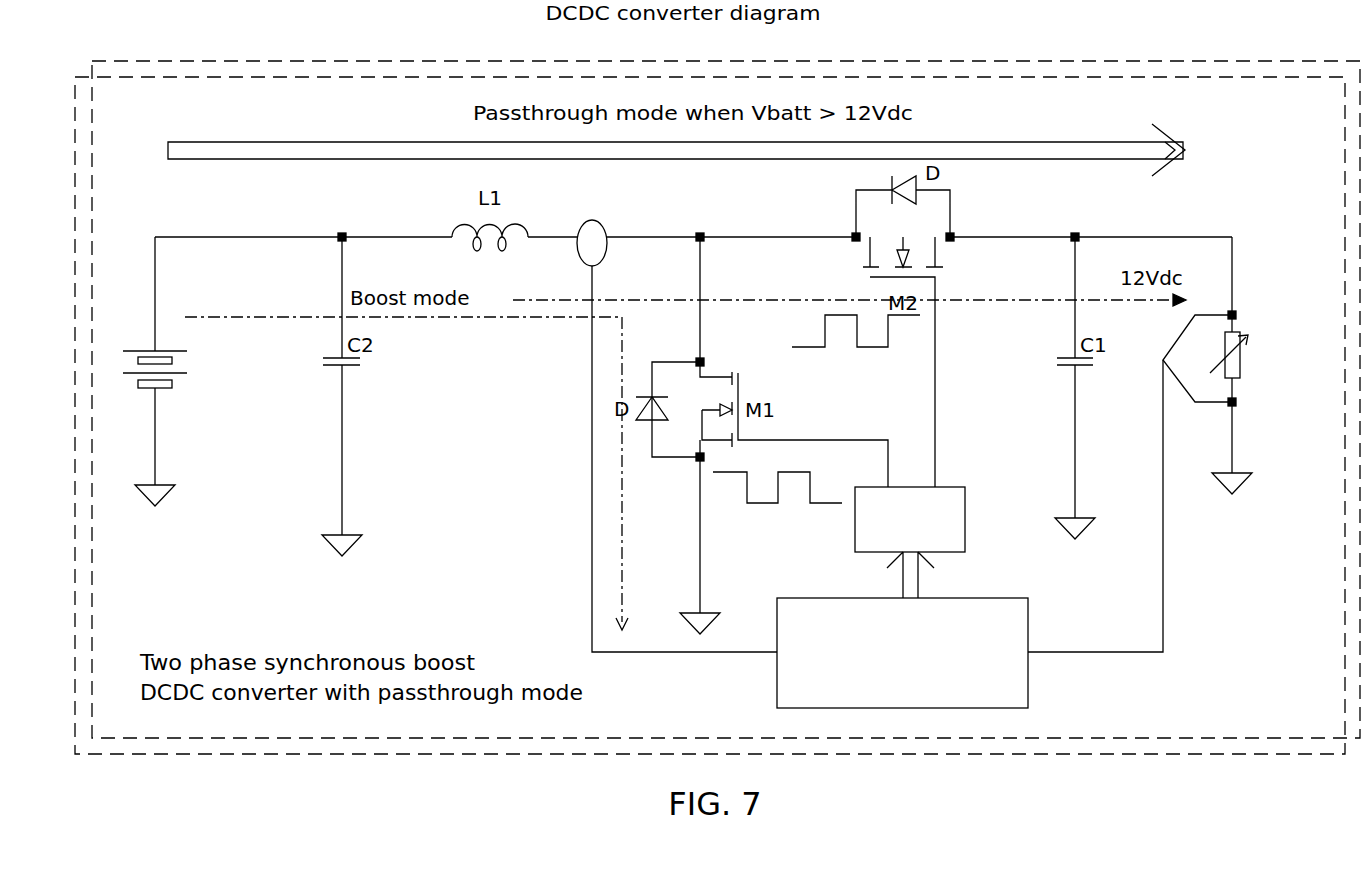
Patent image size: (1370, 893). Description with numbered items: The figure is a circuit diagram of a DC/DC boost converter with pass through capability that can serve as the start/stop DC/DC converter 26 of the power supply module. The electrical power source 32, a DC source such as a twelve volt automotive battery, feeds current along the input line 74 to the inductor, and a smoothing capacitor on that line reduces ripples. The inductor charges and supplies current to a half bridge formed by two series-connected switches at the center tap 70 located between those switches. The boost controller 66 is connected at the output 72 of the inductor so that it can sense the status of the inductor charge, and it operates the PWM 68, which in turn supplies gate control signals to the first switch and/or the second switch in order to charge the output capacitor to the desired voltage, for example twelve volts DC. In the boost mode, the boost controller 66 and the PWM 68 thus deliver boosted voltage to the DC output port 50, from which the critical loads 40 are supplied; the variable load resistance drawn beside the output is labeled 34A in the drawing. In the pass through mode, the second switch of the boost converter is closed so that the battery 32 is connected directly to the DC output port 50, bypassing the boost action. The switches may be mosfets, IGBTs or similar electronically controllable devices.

The start/stop DC/DC converter 26 is at (1228, 145).
The electrical power source 32 is at (165, 346).
The input line 74 is at (269, 236).
The output of the inductor 72 is at (592, 219).
The center tap 70 is at (700, 232).
The PWM 68 is at (966, 521).
The boost controller 66 is at (1029, 626).
The DC output port 50 is at (1236, 311).
The critical loads 40 is at (1246, 320).
The load resistor branch 34A is at (1159, 483).